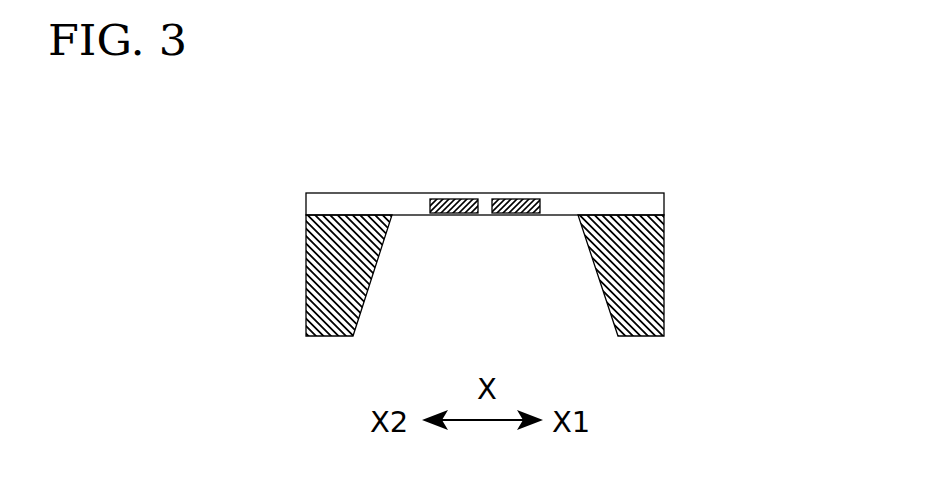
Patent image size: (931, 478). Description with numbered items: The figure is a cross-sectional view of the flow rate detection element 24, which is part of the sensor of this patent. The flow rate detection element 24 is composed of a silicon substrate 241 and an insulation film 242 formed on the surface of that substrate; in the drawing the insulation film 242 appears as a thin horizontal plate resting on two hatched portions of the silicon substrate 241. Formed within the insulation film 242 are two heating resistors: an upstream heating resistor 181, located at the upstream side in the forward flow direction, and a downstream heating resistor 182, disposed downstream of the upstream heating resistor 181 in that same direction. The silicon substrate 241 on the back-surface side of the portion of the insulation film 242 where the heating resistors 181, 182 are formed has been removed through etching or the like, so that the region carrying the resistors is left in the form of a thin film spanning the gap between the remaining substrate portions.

The flow rate detection element 24 is at (505, 116).
The silicon substrate 241 is at (318, 282).
The insulation film 242 is at (653, 200).
The upstream heating resistor 181 is at (455, 198).
The downstream heating resistor 182 is at (522, 198).